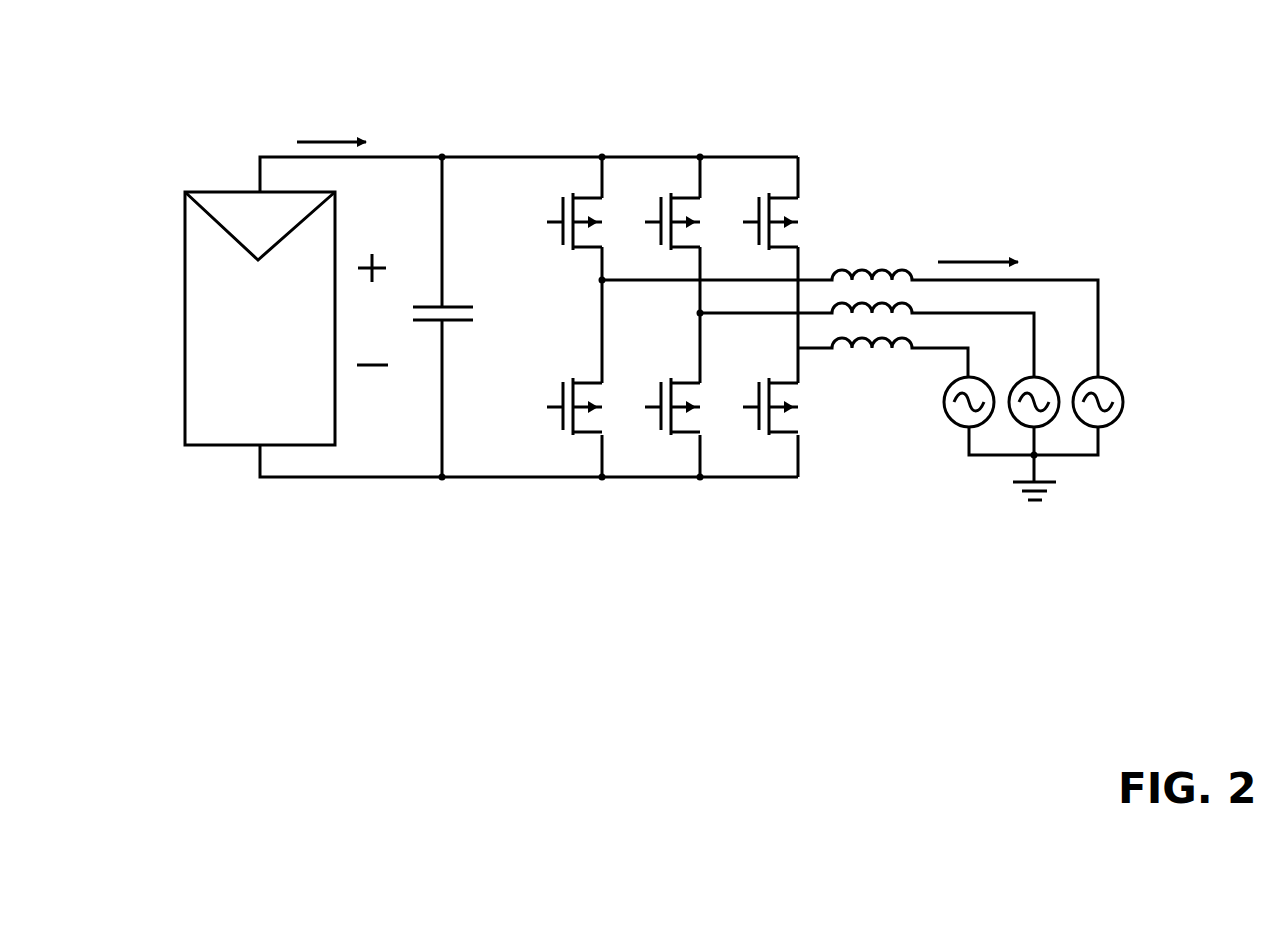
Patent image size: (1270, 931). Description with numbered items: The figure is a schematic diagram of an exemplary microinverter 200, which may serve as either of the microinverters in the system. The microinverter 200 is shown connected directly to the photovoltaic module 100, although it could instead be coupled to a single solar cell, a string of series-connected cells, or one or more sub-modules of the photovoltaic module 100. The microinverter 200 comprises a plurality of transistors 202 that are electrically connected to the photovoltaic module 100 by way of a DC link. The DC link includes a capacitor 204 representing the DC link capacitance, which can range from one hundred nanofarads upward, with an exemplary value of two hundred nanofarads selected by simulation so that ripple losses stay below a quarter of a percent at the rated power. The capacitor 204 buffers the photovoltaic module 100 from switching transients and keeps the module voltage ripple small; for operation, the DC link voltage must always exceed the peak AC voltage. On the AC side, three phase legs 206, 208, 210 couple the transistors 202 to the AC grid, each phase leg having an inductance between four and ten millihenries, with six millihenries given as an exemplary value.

The photovoltaic module 100 is at (260, 318).
The microinverter 200 is at (1030, 122).
The plurality of transistors 202 is at (805, 120).
The capacitor 204 is at (455, 335).
The phase leg 206 is at (1042, 277).
The phase leg 208 is at (1034, 333).
The phase leg 210 is at (930, 352).